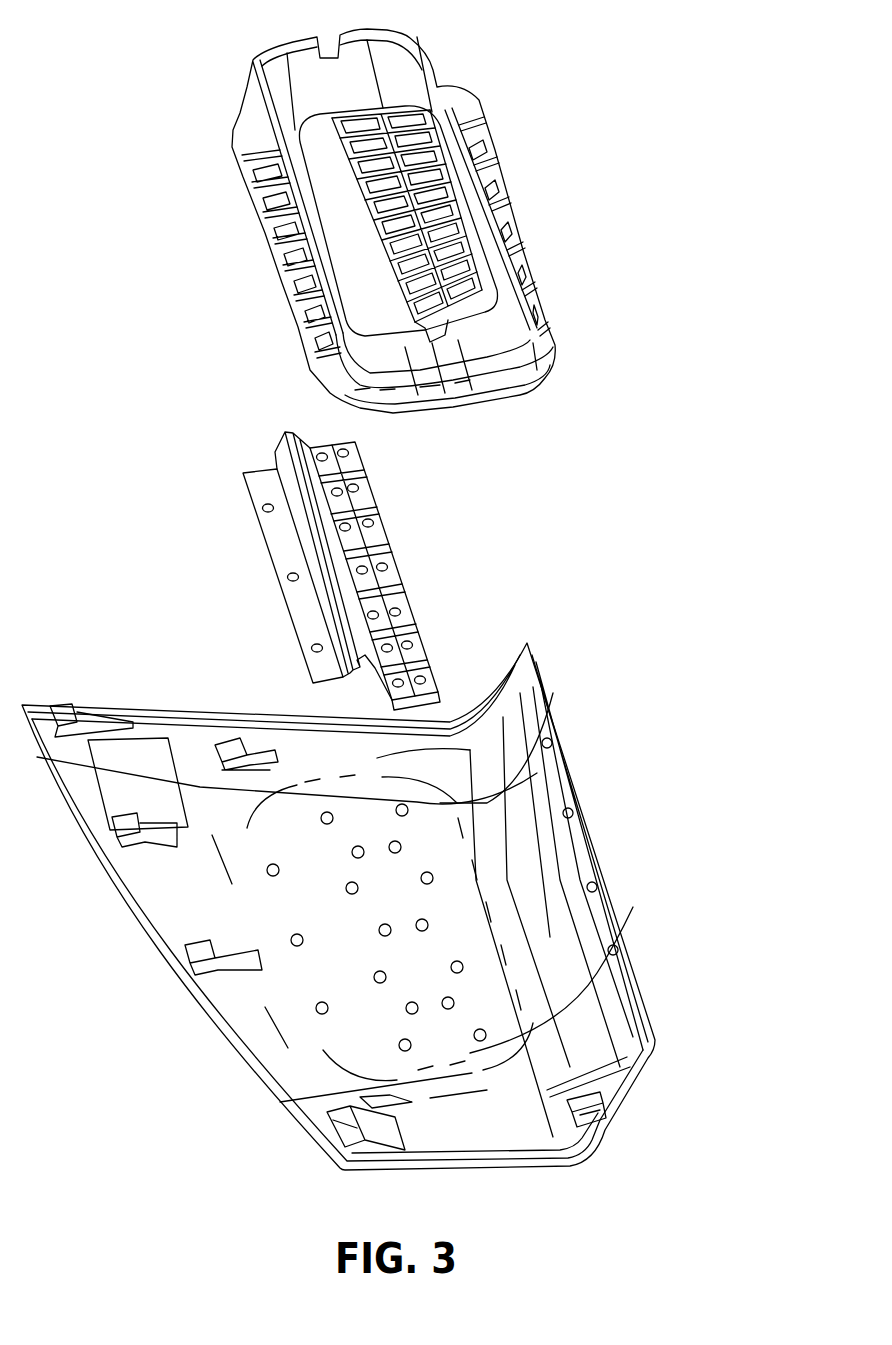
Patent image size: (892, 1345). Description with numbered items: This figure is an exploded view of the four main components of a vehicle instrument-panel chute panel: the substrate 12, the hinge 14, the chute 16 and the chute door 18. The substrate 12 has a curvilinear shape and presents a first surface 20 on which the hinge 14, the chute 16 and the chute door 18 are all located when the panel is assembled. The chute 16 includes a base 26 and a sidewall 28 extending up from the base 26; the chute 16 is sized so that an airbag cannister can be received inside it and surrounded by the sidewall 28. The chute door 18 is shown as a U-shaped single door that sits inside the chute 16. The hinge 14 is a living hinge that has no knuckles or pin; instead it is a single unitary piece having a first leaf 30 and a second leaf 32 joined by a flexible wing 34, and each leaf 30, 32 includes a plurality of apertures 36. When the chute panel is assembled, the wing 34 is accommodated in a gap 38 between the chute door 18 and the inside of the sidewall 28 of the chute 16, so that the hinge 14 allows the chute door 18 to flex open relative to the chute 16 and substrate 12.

The substrate 12 is at (197, 1000).
The hinge 14 is at (301, 546).
The chute 16 is at (233, 128).
The chute door 18 is at (348, 190).
The first surface 20 is at (592, 1038).
The base 26 is at (318, 378).
The sidewall 28 is at (273, 82).
The first leaf 30 is at (312, 617).
The second leaf 32 is at (402, 600).
The wing 34 is at (287, 443).
The apertures 36 is at (292, 577).
The gap 38 is at (340, 248).